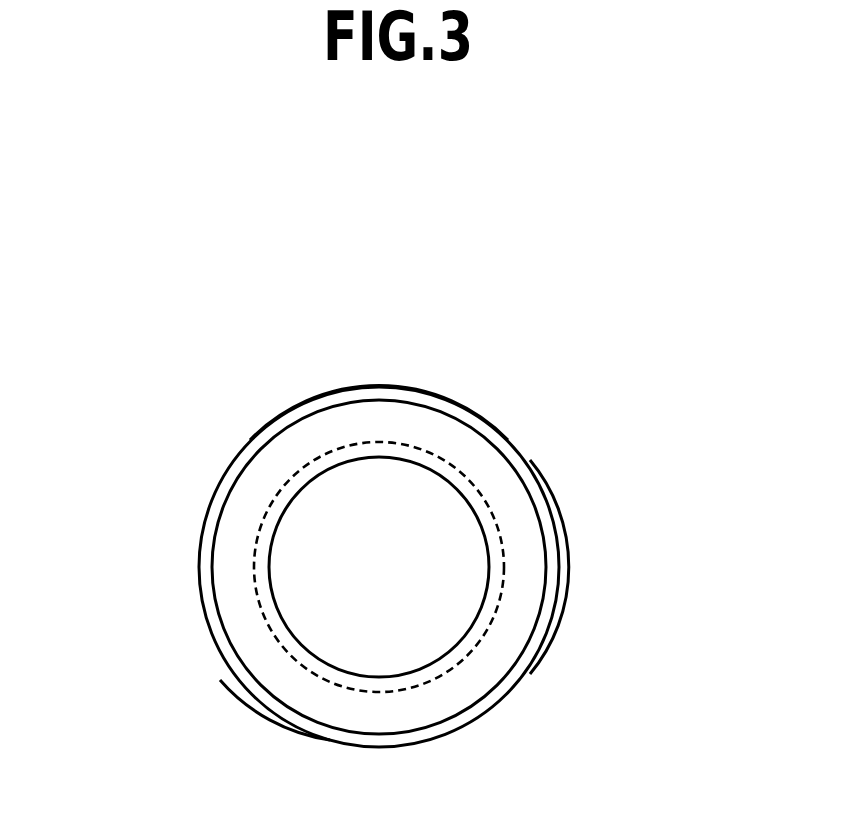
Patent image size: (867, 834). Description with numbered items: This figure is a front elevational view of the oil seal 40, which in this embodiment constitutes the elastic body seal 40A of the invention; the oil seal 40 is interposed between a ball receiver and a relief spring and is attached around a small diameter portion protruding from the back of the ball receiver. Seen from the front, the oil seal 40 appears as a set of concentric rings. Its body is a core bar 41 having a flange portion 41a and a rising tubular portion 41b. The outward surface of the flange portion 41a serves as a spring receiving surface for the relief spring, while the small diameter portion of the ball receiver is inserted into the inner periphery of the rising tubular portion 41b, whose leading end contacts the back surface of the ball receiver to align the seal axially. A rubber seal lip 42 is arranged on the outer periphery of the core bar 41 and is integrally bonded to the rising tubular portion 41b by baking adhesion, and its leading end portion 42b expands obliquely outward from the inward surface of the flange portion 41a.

The oil seal 40 is at (243, 420).
The elastic body seal 40A is at (360, 365).
The core bar 41 is at (230, 562).
The flange portion 41a is at (550, 565).
The rising tubular portion 41b is at (498, 527).
The seal lip 42 is at (207, 627).
The leading end portion 42b is at (265, 703).